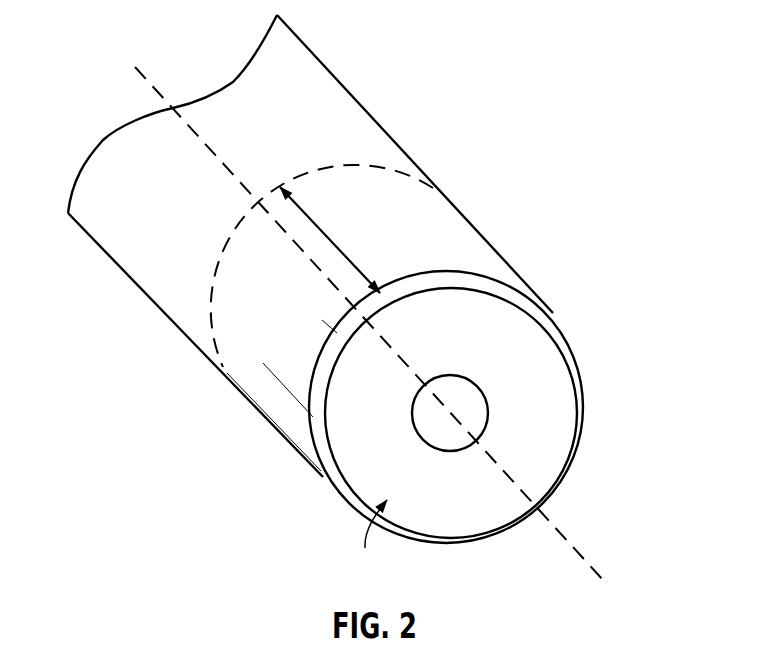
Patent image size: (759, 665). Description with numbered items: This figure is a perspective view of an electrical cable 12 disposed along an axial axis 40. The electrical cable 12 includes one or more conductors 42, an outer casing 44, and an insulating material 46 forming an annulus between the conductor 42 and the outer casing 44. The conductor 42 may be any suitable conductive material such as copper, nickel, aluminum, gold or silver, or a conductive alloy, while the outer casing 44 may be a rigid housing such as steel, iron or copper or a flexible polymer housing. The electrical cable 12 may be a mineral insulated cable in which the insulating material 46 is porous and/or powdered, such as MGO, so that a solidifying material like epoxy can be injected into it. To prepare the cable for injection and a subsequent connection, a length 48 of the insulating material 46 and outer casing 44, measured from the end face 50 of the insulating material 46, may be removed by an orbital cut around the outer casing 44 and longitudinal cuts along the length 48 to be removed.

The electrical cable 12 is at (550, 47).
The axial axis 40 is at (572, 542).
The conductor 42 is at (481, 388).
The outer casing 44 is at (320, 469).
The insulating material 46 is at (537, 339).
The length 48 is at (330, 240).
The end face 50 is at (368, 542).